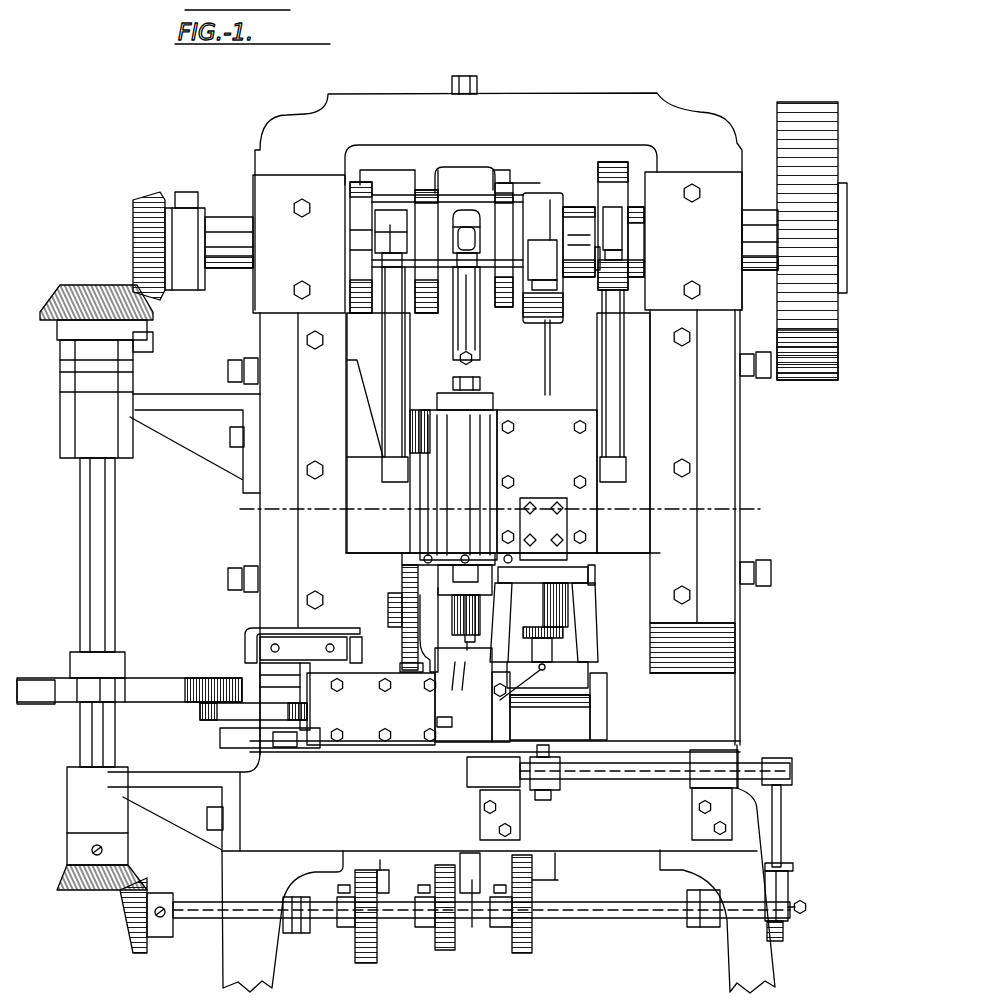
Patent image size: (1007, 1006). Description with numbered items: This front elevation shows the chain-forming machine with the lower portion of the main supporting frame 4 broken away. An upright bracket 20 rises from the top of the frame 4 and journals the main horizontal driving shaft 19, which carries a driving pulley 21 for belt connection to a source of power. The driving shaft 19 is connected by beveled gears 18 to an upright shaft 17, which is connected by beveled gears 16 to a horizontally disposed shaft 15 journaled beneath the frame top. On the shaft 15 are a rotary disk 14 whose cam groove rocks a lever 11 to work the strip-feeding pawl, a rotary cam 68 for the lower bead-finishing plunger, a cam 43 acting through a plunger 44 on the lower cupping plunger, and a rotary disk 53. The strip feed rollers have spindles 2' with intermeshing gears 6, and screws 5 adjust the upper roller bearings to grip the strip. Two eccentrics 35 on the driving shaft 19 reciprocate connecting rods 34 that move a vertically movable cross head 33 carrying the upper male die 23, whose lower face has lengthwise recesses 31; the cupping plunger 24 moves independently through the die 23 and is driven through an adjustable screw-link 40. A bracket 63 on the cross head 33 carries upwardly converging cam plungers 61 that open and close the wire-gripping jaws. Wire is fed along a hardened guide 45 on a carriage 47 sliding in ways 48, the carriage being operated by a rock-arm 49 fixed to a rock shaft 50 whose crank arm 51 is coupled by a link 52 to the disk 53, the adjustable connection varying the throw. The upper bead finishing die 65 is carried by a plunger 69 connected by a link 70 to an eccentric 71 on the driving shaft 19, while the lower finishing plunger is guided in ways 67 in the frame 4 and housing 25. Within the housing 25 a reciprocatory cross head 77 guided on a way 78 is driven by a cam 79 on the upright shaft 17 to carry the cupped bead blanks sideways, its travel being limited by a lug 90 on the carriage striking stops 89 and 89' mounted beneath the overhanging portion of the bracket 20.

The spindles 2' is at (379, 610).
The main supporting frame 4 is at (265, 822).
The screws 5 is at (491, 511).
The intermeshing gears 6 is at (402, 580).
The lever 11 is at (389, 875).
The rotary disk 14 is at (366, 963).
The horizontally disposed shaft 15 is at (620, 915).
The beveled gears 16 is at (110, 890).
The upright shaft 17 is at (106, 610).
The beveled gears 18 is at (132, 250).
The main horizontal driving shaft 19 is at (215, 232).
The bracket 20 is at (272, 472).
The driving pulley 21 is at (805, 112).
The male die 23 is at (468, 615).
The cupping plunger 24 is at (472, 686).
The housing 25 is at (585, 713).
The lengthwise recesses 31 is at (448, 631).
The cross head 33 is at (503, 433).
The connecting rods 34 is at (392, 348).
The eccentrics 35 is at (378, 192).
The adjustable screw-link 40 is at (456, 362).
The cam 43 is at (446, 950).
The plunger 44 is at (472, 928).
The guide 45 is at (508, 697).
The carriage 47 is at (575, 675).
The ways 48 is at (552, 700).
The rock-arm 49 is at (565, 780).
The rock shaft 50 is at (618, 780).
The crank arm 51 is at (783, 810).
The link 52 is at (793, 876).
The rotary disk 53 is at (784, 932).
The cam plungers 61 is at (585, 648).
The bracket 63 is at (575, 573).
The upper bead finishing die 65 is at (548, 648).
The ways 67 is at (556, 877).
The rotary cam 68 is at (522, 953).
The plunger 69 is at (570, 600).
The link 70 is at (551, 378).
The eccentric 71 is at (558, 200).
The cross head 77 is at (213, 713).
The way 78 is at (302, 695).
The cam 79 is at (172, 683).
The stop 89 is at (324, 657).
The stop 89' is at (285, 646).
The lug 90 is at (342, 678).